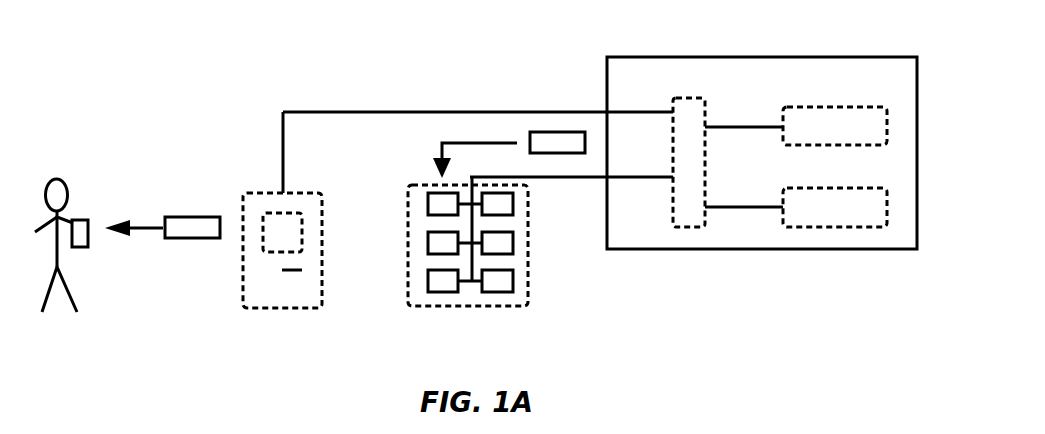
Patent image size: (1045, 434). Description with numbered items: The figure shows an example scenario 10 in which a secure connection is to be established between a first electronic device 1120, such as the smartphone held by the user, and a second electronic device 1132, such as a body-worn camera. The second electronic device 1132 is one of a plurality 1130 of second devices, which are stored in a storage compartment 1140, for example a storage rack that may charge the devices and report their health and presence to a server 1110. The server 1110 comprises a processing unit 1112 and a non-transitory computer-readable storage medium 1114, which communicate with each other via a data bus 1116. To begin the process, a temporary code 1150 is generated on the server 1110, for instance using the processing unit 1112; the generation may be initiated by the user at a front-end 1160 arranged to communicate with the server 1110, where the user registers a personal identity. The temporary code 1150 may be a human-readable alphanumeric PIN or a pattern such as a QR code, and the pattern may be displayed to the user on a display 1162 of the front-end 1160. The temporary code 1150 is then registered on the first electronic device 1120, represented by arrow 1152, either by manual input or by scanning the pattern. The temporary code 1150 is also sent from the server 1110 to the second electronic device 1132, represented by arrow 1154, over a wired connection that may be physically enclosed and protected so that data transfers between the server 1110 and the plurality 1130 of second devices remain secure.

The scenario 10 is at (108, 65).
The first electronic device 1120 is at (80, 240).
The arrow 1152 is at (137, 225).
The temporary code 1150 is at (200, 228).
The front-end 1160 is at (243, 237).
The display 1162 is at (277, 228).
The arrow 1154 is at (435, 165).
The plurality of second devices 1130 is at (486, 264).
The storage compartment 1140 is at (437, 308).
The second electronic device 1132 is at (435, 208).
The server 1110 is at (787, 88).
The data bus 1116 is at (690, 215).
The processing unit 1112 is at (830, 120).
The non-transitory computer-readable storage medium 1114 is at (880, 215).